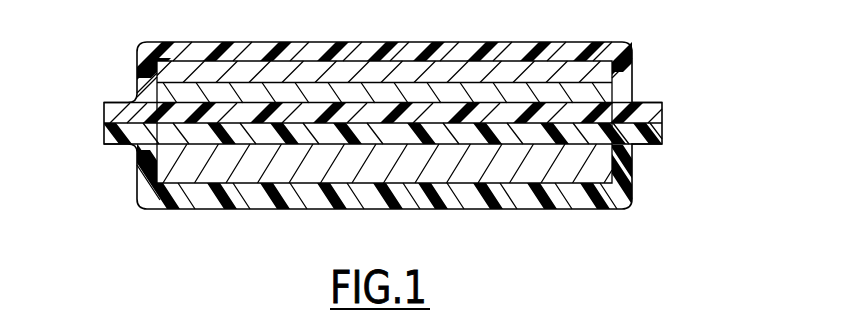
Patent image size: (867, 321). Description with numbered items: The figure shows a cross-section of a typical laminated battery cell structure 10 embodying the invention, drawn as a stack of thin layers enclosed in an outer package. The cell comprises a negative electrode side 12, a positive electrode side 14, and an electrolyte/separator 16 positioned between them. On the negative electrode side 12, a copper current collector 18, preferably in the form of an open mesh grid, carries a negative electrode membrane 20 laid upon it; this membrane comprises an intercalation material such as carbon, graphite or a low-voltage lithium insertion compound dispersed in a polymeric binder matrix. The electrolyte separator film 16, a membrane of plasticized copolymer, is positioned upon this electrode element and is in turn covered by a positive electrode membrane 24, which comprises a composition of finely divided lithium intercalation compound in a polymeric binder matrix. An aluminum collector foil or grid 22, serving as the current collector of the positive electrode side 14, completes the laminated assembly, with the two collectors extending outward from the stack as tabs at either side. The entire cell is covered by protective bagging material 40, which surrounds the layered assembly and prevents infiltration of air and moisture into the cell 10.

The laminated battery cell structure 10 is at (690, 24).
The negative electrode side 12 is at (350, 62).
The positive electrode side 14 is at (258, 183).
The electrolyte/separator 16 is at (575, 112).
The current collector 18 is at (475, 72).
The negative electrode membrane 20 is at (167, 93).
The current collector 22 is at (170, 165).
The positive electrode membrane 24 is at (590, 142).
The protective bagging material 40 is at (615, 210).